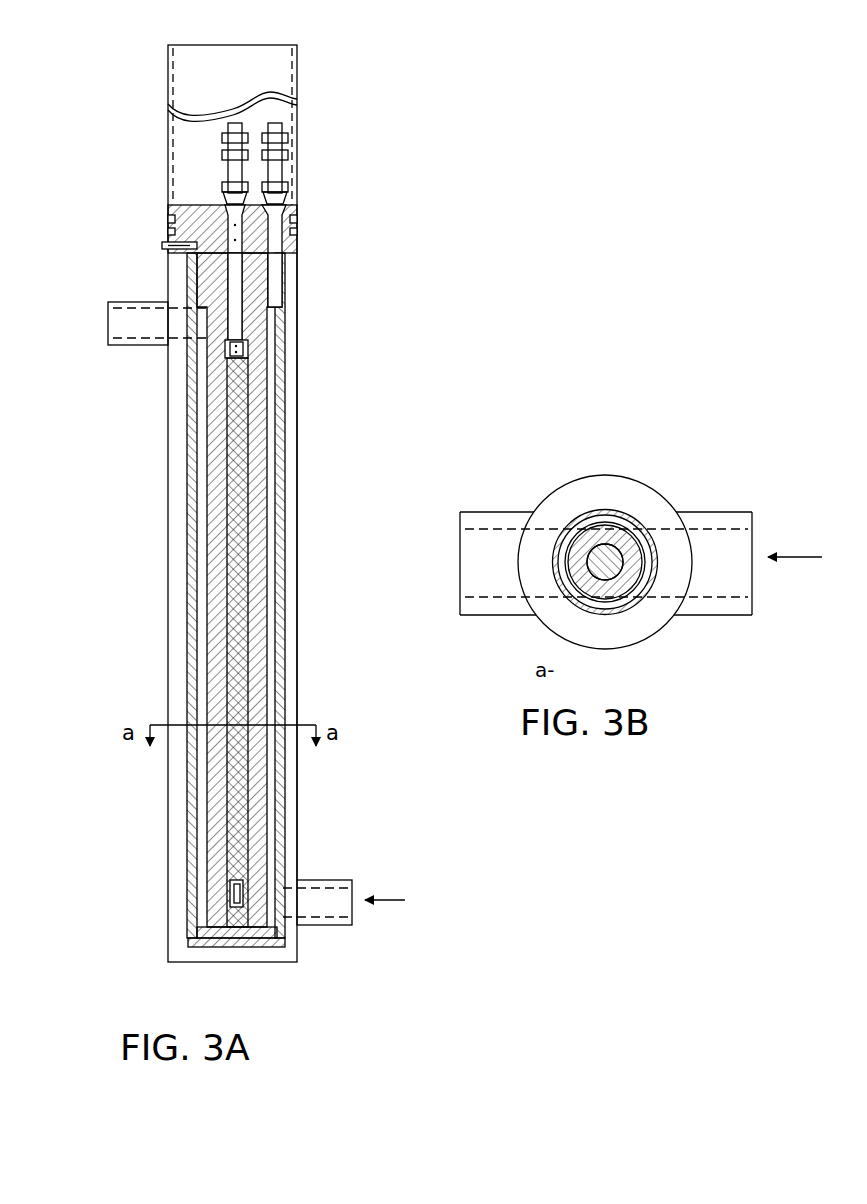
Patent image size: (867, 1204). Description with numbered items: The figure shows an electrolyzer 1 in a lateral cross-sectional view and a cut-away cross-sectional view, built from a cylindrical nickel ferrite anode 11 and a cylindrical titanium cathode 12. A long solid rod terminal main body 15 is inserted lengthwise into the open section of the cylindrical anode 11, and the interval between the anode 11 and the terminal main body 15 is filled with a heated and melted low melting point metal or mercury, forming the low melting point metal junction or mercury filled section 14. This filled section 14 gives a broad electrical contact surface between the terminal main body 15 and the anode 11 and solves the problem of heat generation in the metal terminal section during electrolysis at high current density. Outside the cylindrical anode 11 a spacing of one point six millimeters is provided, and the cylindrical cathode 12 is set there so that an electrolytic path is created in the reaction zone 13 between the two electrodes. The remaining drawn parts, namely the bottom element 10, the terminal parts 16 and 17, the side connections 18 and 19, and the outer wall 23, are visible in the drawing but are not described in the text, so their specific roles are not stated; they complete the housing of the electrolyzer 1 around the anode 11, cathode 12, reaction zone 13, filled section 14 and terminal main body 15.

In FIG. 3A, the electrolyzer 1 is at (313, 285).
In FIG. 3B, the electrolyzer 1 is at (442, 561).
In FIG. 3A, the bottom plate 10 is at (192, 947).
In FIG. 3A, the cylindrical nickel ferrite anode 11 is at (218, 523).
In FIG. 3B, the cylindrical nickel ferrite anode 11 is at (583, 543).
In FIG. 3A, the cylindrical titanium cathode 12 is at (187, 437).
In FIG. 3B, the cylindrical titanium cathode 12 is at (572, 603).
In FIG. 3A, the reaction zone 13 is at (197, 270).
In FIG. 3B, the reaction zone 13 is at (632, 588).
In FIG. 3A, the low melting point metal junction or mercury filled section 14 is at (168, 212).
In FIG. 3B, the low melting point metal junction or mercury filled section 14 is at (635, 540).
In FIG. 3A, the terminal main body 15 is at (235, 427).
In FIG. 3A, the electrical terminal 16 is at (228, 123).
In FIG. 3A, the electrical terminal 17 is at (270, 122).
In FIG. 3A, the inlet pipe 18 is at (355, 905).
In FIG. 3B, the inlet pipe 18 is at (772, 572).
In FIG. 3A, the outlet pipe 19 is at (108, 330).
In FIG. 3B, the outlet pipe 19 is at (463, 532).
In FIG. 3A, the housing wall 23 is at (300, 450).
In FIG. 3B, the housing wall 23 is at (630, 473).